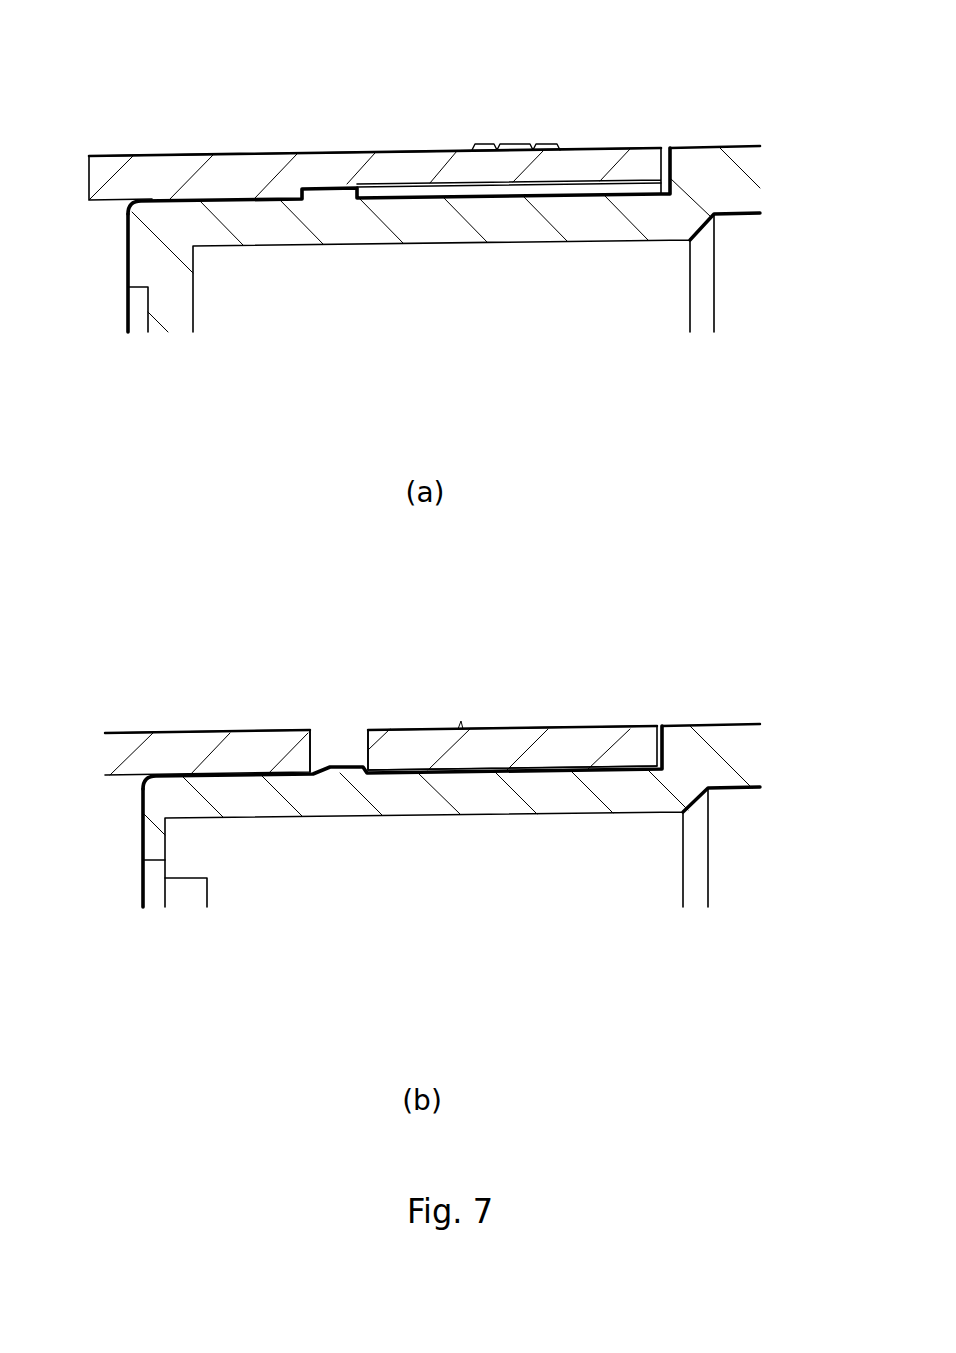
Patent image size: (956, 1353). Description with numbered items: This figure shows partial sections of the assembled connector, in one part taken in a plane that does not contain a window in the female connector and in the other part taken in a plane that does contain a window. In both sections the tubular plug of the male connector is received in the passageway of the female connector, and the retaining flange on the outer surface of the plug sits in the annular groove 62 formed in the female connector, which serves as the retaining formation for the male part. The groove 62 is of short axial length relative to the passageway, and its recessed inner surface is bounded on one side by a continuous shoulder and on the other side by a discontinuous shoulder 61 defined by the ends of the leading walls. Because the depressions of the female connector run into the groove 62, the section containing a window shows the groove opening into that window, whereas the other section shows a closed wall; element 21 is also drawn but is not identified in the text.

The intermediate strip 21 is at (418, 184).
The discontinuous shoulder 61 is at (373, 752).
The annular groove 62 is at (341, 718).